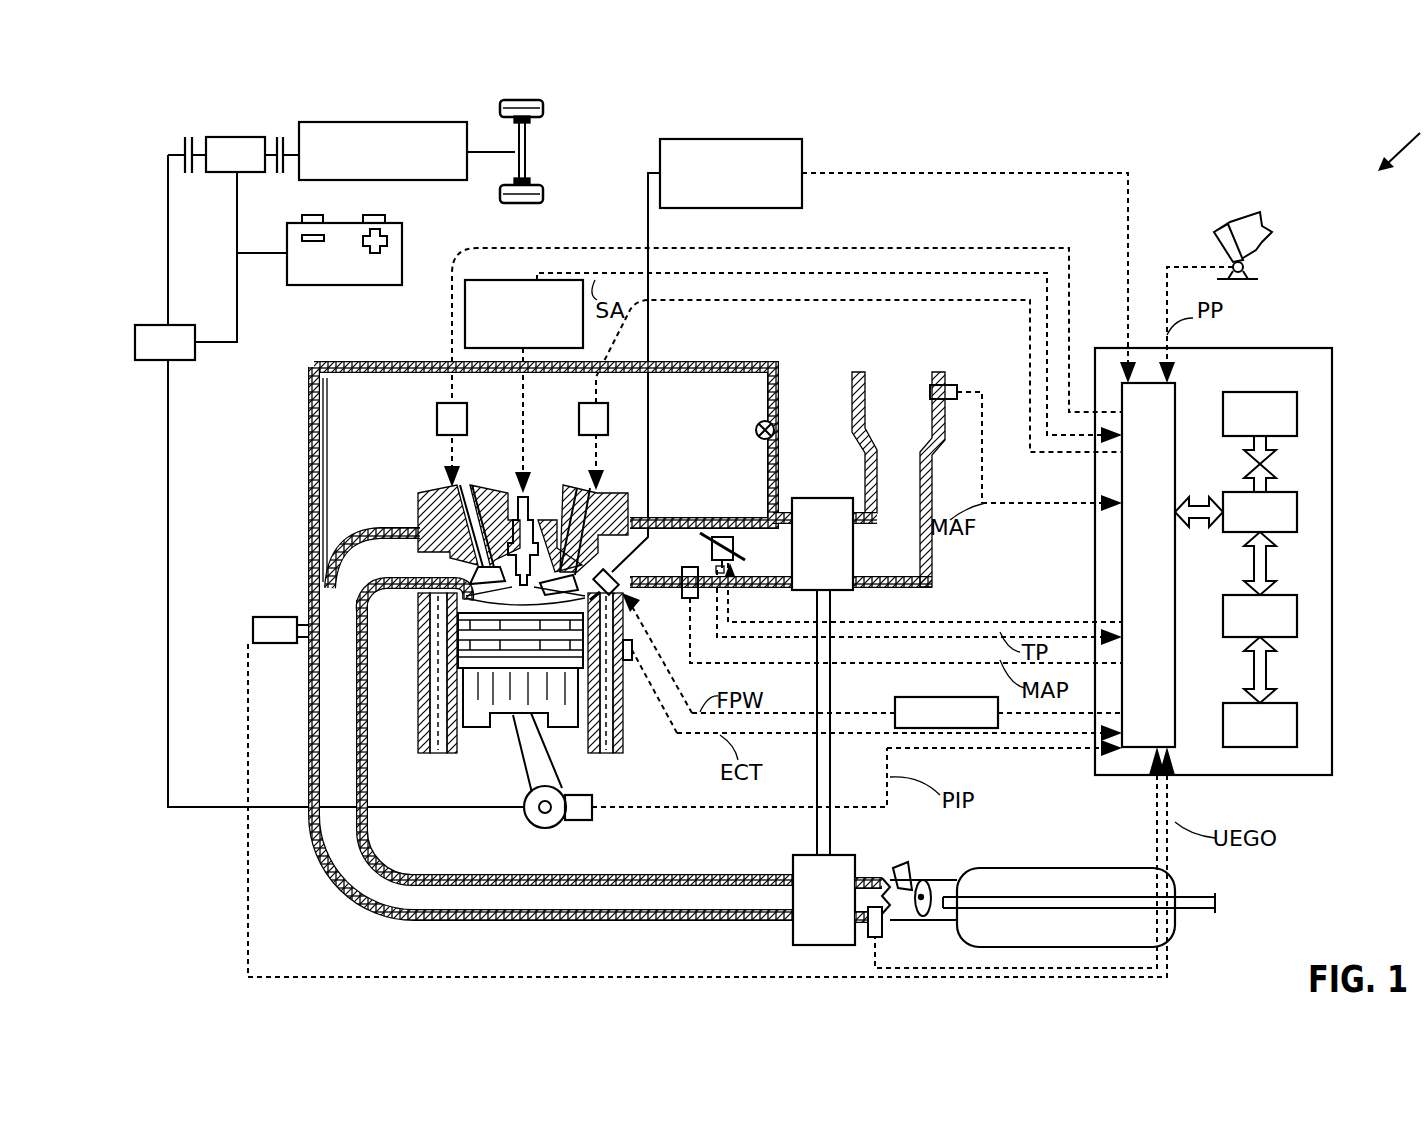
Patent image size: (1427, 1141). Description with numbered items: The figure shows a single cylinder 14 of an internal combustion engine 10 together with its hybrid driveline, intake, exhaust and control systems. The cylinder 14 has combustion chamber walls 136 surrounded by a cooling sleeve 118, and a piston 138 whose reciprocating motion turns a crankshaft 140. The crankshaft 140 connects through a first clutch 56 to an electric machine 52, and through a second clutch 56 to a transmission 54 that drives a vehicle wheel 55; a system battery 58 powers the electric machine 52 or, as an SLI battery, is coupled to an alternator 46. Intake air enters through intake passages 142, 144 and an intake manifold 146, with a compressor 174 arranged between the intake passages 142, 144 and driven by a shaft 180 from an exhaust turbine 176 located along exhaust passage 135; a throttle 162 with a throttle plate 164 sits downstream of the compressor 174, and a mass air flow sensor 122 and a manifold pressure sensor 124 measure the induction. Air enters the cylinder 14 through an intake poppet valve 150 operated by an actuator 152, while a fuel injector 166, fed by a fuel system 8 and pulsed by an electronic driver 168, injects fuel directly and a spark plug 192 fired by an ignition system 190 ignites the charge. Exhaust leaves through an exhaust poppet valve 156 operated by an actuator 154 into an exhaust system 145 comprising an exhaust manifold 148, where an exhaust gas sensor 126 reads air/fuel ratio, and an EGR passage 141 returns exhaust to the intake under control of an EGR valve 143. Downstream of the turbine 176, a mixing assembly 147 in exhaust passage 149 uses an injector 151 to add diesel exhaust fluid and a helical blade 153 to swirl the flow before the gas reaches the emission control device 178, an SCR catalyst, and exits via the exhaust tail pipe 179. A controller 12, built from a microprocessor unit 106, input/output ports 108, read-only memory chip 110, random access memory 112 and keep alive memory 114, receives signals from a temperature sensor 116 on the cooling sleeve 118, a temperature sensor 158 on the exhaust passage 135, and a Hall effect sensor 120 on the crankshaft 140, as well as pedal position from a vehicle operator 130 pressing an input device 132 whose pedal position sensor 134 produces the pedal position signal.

The fuel system 8 is at (772, 140).
The internal combustion engine 10 is at (402, 446).
The controller 12 is at (1332, 355).
The cylinder 14 is at (420, 614).
The alternator 46 is at (140, 360).
The electric machine 52 is at (226, 137).
The transmission 54 is at (440, 180).
The vehicle wheel 55 is at (500, 105).
The clutch 56 is at (185, 141).
The system battery 58 is at (337, 285).
The microprocessor unit 106 is at (1297, 512).
The input/output ports 108 is at (1175, 390).
The read-only memory chip 110 is at (1297, 410).
The random access memory 112 is at (1297, 615).
The keep alive memory 114 is at (1297, 722).
The temperature sensor 116 is at (630, 665).
The cooling sleeve 118 is at (614, 700).
The Hall effect sensor 120 is at (583, 822).
The mass air flow sensor 122 is at (950, 385).
The MAP sensor 124 is at (690, 600).
The exhaust gas sensor 126 is at (252, 620).
The vehicle operator 130 is at (1268, 228).
The input device 132 is at (1218, 243).
The pedal position sensor 134 is at (1250, 265).
The exhaust passage 135 is at (710, 876).
The combustion chamber walls 136 is at (462, 745).
The piston 138 is at (506, 700).
The crankshaft 140 is at (533, 828).
The EGR passage 141 is at (725, 367).
The intake passage 142 is at (898, 479).
The EGR valve 143 is at (774, 432).
The intake passage 144 is at (781, 559).
The exhaust system 145 is at (272, 550).
The intake manifold 146 is at (673, 548).
The mixing assembly 147 is at (888, 840).
The exhaust manifold 148 is at (375, 560).
The exhaust passage 149 is at (890, 912).
The intake poppet valve 150 is at (555, 555).
The injector 151 is at (893, 872).
The actuator 152 is at (582, 425).
The helical blade 153 is at (932, 885).
The actuator 154 is at (437, 420).
The exhaust poppet valve 156 is at (440, 540).
The temperature sensor 158 is at (875, 938).
The throttle 162 is at (728, 530).
The throttle plate 164 is at (714, 533).
The fuel injector 166 is at (597, 575).
The electronic driver 168 is at (893, 698).
The compressor 174 is at (822, 544).
The exhaust turbine 176 is at (824, 900).
The emission control device 178 is at (1080, 878).
The exhaust tail pipe 179 is at (1212, 905).
The shaft 180 is at (815, 830).
The ignition system 190 is at (478, 278).
The spark plug 192 is at (518, 530).